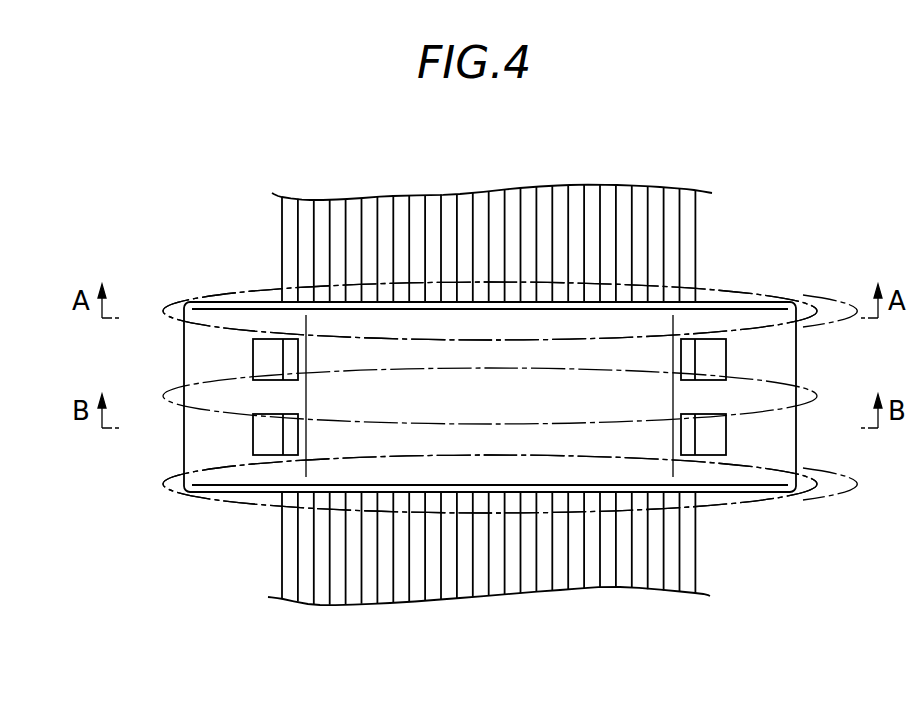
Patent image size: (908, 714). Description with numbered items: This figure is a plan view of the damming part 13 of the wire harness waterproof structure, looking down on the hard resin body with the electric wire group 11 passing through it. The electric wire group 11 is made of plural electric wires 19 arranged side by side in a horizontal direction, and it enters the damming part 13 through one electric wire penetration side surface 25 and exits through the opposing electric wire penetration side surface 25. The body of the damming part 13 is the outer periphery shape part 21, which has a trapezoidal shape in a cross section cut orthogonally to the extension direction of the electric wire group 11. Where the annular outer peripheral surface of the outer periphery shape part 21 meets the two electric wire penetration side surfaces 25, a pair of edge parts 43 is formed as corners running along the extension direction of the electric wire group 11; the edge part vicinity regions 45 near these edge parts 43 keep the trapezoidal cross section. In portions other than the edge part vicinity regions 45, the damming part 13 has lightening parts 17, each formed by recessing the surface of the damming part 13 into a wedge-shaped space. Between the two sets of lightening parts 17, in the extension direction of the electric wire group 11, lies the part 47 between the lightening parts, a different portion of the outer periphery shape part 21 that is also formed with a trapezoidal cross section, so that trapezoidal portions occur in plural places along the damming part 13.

The electric wire group 11 is at (283, 233).
The damming part 13 is at (175, 314).
The lightening parts 17 is at (253, 355).
The electric wires 19 is at (323, 578).
The outer periphery shape part 21 is at (490, 352).
The electric wire penetration side surfaces 25 is at (727, 296).
The edge parts 43 is at (245, 300).
The edge part vicinity regions 45 is at (803, 295).
The part between the lightening parts 47 is at (815, 380).